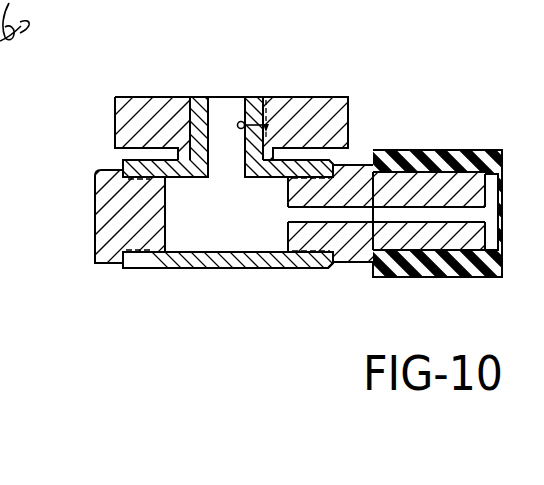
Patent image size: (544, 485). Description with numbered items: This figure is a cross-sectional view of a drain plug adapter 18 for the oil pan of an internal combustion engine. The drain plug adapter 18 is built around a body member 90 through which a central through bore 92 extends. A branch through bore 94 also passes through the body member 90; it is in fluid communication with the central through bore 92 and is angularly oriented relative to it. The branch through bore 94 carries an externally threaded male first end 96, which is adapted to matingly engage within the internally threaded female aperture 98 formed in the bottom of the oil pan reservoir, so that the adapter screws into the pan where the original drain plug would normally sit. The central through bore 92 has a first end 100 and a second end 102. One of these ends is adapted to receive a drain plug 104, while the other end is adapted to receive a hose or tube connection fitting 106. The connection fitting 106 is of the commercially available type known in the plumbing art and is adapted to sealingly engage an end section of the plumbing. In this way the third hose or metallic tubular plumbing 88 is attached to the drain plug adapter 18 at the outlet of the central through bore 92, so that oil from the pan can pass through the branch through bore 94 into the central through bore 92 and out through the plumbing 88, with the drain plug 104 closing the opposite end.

The drain plug adapter 18 is at (272, 200).
The third hose or metallic tubular plumbing 88 is at (502, 112).
The body member 90 is at (205, 270).
The central through bore 92 is at (235, 242).
The branch through bore 94 is at (267, 118).
The externally threaded male first end 96 is at (200, 97).
The internally threaded female aperture 98 is at (210, 136).
The first end of the central through bore 100 is at (122, 270).
The second end of the central through bore 102 is at (335, 263).
The drain plug 104 is at (95, 243).
The hose or tube connection fitting 106 is at (355, 165).